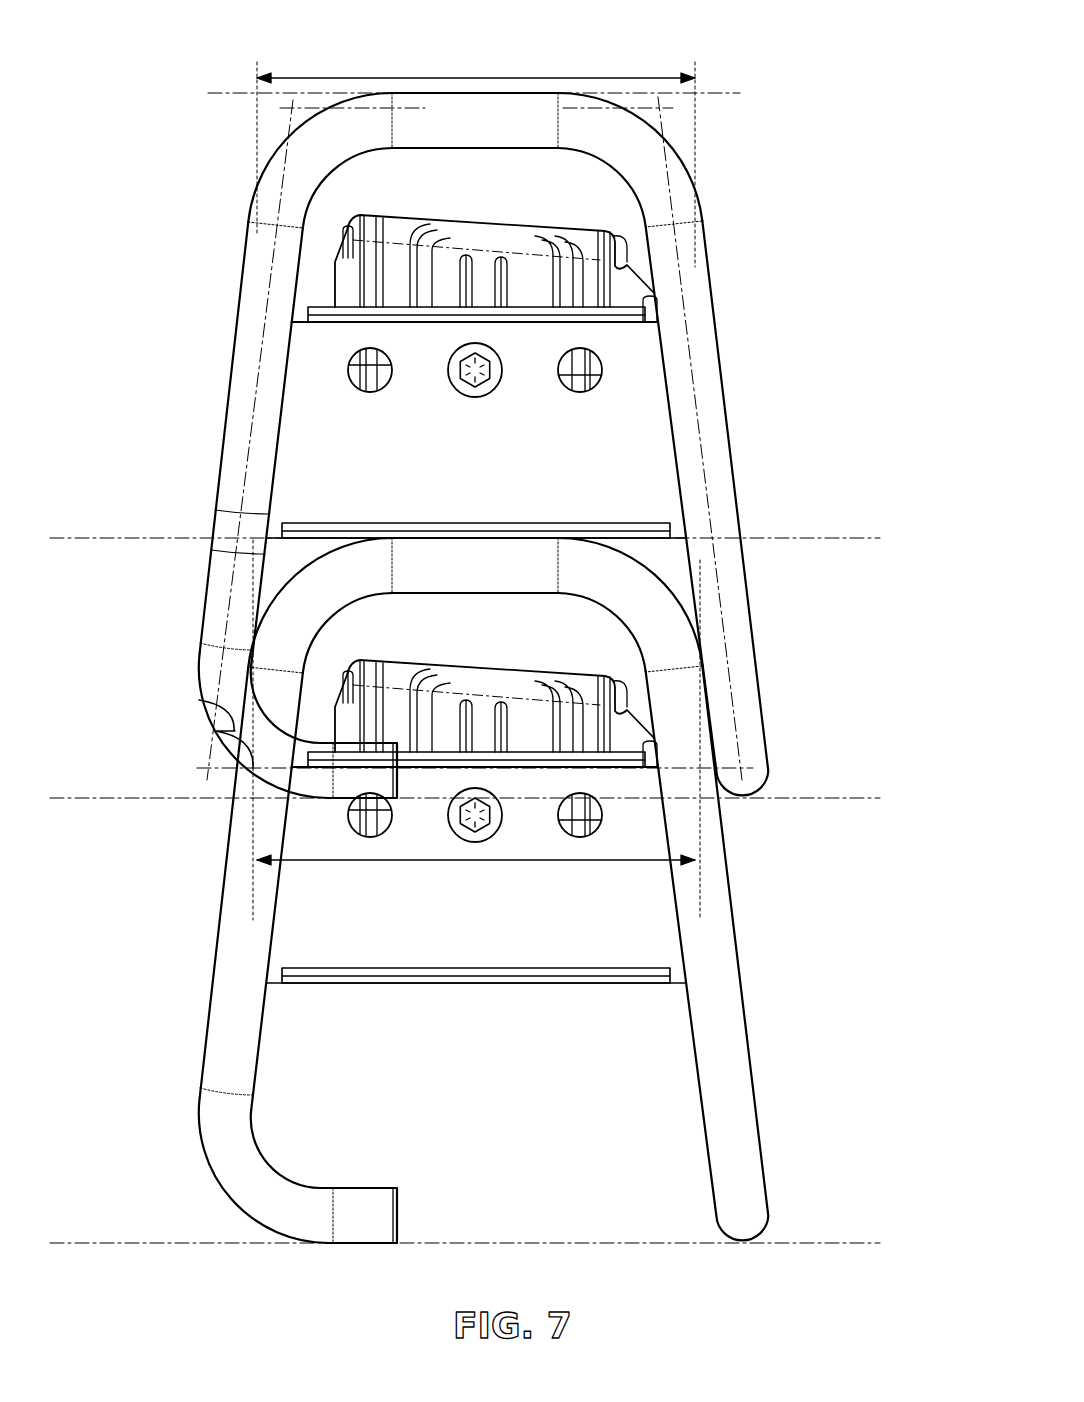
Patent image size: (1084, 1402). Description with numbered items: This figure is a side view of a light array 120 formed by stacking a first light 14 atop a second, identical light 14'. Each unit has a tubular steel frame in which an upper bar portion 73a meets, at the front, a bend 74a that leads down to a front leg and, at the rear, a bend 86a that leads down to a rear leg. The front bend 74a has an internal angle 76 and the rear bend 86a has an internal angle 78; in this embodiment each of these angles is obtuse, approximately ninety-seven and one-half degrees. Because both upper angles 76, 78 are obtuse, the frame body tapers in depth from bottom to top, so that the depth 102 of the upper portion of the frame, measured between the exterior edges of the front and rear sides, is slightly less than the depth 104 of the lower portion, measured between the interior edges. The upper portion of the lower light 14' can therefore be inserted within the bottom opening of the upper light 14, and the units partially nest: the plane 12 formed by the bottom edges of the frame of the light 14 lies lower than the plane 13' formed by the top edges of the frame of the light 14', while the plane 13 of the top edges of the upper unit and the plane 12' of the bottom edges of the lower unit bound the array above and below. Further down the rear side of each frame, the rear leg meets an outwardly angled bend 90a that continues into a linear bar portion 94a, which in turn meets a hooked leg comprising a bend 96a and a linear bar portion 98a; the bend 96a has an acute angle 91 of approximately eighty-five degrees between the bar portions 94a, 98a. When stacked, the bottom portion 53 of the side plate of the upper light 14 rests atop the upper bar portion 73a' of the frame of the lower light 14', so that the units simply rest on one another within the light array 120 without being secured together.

The light array 120 is at (789, 38).
The bar portion 73a is at (443, 475).
The bar portion 73a' is at (521, 890).
The depth of upper portion of frame 102 is at (590, 77).
The depth of lower portion of frame 104 is at (516, 862).
The plane of top edges of frame 13 is at (494, 76).
The plane of top edges of frame 13' is at (501, 521).
The plane of bottom edges of frame 12 is at (494, 782).
The plane of bottom edges of frame 12' is at (501, 1225).
The bend 86a is at (268, 203).
The internal angle 78 is at (323, 133).
The internal angle 76 is at (630, 133).
The bend 74a is at (685, 197).
The light 14 is at (717, 508).
The light 14' is at (728, 953).
The portion of side plate 53 is at (538, 528).
The bend 90a is at (222, 530).
The bar portion 94a is at (215, 590).
The angle 91 is at (200, 699).
The bend 96a is at (277, 775).
The bar portion 98a is at (355, 788).